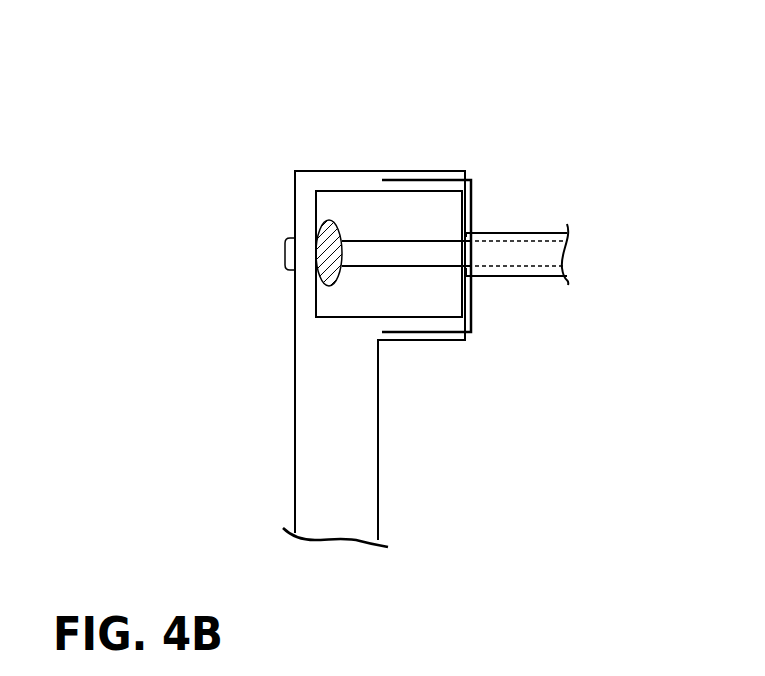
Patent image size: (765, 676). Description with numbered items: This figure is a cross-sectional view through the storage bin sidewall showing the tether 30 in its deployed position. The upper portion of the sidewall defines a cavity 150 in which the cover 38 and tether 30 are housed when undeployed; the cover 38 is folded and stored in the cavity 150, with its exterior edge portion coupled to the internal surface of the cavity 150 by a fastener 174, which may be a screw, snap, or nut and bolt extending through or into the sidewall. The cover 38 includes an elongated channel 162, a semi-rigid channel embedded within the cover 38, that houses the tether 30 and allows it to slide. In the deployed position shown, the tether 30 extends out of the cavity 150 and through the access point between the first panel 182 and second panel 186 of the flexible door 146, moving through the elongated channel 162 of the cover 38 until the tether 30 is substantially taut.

The tether 30 is at (388, 253).
The cover 38 is at (535, 225).
The flexible door 146 is at (478, 297).
The cavity 150 is at (438, 217).
The elongated channel 162 is at (537, 277).
The fastener 174 is at (285, 255).
The first panel 182 is at (472, 188).
The second panel 186 is at (470, 320).